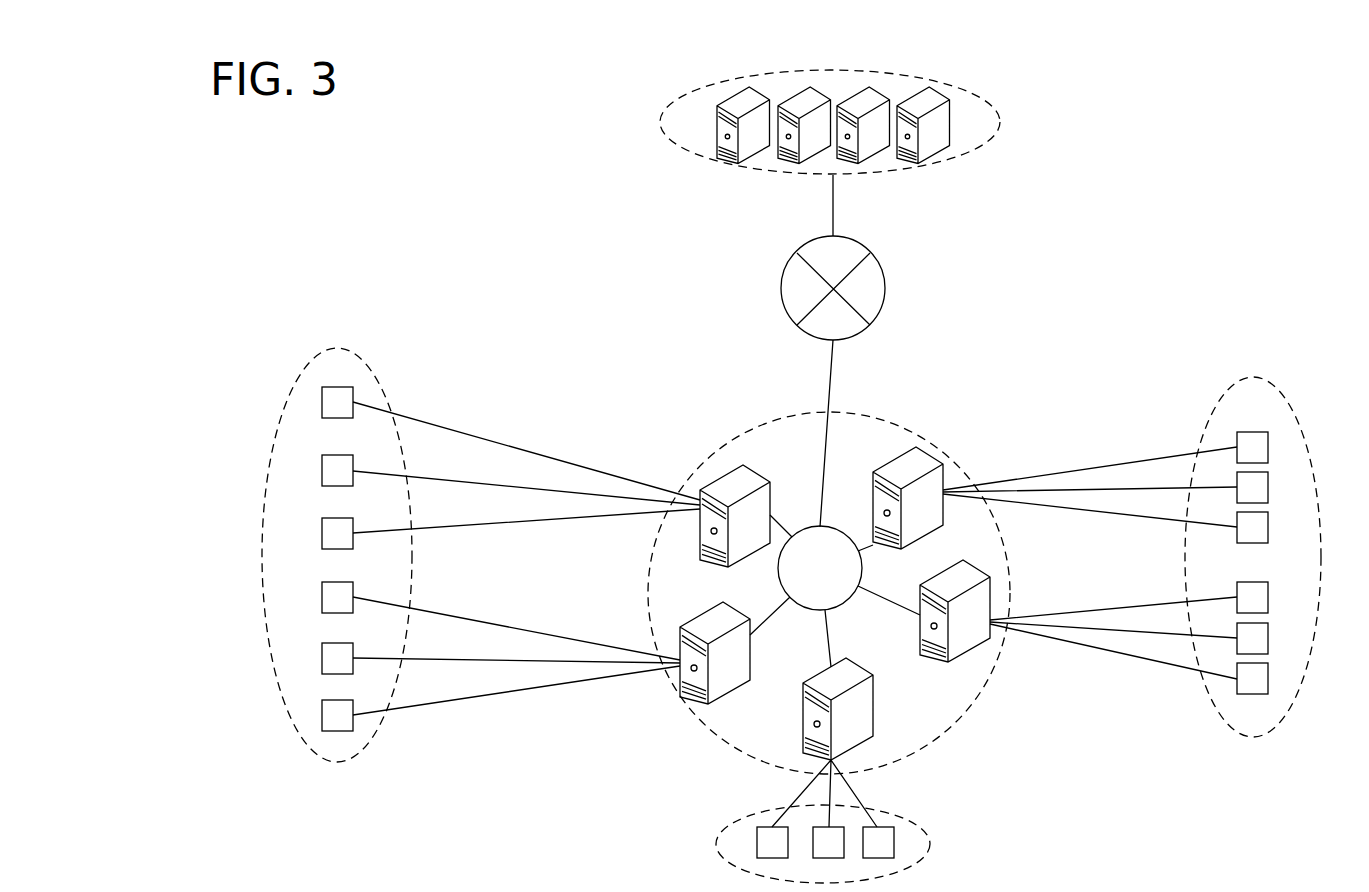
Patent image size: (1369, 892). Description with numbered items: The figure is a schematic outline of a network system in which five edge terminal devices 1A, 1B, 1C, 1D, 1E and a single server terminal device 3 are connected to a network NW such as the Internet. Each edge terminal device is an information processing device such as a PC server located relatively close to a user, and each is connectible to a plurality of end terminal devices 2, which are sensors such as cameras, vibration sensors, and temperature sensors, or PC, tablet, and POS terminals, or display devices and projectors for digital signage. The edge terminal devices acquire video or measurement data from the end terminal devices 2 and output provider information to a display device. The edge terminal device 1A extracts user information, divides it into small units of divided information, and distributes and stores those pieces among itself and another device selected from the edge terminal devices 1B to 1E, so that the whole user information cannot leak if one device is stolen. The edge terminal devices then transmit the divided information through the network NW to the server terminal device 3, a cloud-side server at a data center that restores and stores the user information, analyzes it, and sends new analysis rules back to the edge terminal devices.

The server terminal device 3 is at (1000, 118).
The network NW is at (885, 288).
The end terminal device 2 is at (335, 348).
The edge terminal device 1A is at (723, 477).
The edge terminal device 1B is at (923, 452).
The edge terminal device 1C is at (960, 663).
The edge terminal device 1D is at (860, 743).
The edge terminal device 1E is at (693, 700).